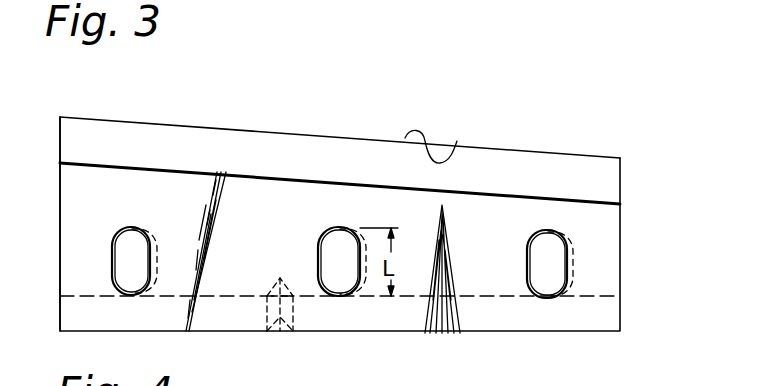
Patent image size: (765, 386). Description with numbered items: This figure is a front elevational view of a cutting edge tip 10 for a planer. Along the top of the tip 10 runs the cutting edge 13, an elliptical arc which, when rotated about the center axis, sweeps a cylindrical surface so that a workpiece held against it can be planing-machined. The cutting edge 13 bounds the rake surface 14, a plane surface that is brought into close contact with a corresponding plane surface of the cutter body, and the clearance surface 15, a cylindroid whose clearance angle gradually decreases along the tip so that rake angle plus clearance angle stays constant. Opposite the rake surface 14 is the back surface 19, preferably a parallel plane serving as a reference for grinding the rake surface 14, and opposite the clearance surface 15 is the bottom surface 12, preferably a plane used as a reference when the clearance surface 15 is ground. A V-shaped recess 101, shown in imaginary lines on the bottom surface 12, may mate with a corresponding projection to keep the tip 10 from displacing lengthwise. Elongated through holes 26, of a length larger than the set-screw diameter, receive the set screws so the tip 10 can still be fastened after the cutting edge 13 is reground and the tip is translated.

The cutting edge tip 10 is at (335, 206).
The bottom surface 12 is at (200, 331).
The cutting edge 13 is at (135, 122).
The rake surface 14 is at (457, 141).
The clearance surface 15 is at (228, 130).
The back surface 19 is at (68, 237).
The elongated through hole 26 is at (341, 290).
The V-shaped recess 101 is at (282, 333).